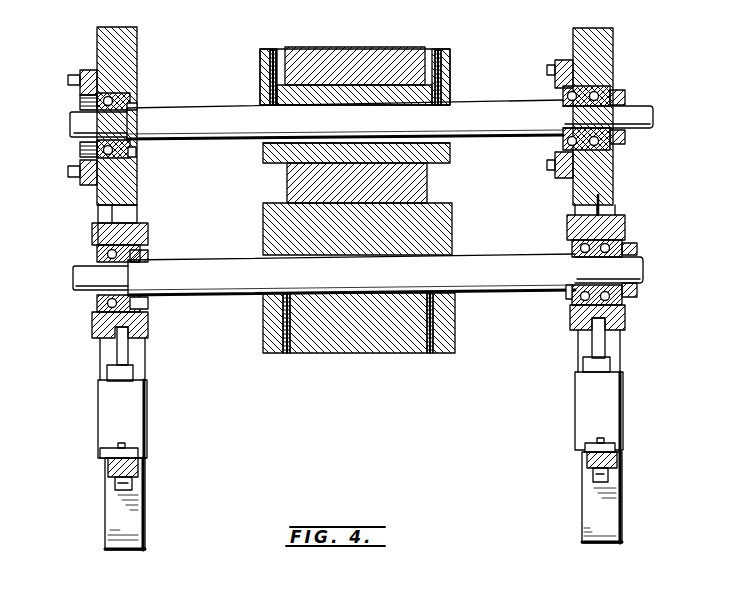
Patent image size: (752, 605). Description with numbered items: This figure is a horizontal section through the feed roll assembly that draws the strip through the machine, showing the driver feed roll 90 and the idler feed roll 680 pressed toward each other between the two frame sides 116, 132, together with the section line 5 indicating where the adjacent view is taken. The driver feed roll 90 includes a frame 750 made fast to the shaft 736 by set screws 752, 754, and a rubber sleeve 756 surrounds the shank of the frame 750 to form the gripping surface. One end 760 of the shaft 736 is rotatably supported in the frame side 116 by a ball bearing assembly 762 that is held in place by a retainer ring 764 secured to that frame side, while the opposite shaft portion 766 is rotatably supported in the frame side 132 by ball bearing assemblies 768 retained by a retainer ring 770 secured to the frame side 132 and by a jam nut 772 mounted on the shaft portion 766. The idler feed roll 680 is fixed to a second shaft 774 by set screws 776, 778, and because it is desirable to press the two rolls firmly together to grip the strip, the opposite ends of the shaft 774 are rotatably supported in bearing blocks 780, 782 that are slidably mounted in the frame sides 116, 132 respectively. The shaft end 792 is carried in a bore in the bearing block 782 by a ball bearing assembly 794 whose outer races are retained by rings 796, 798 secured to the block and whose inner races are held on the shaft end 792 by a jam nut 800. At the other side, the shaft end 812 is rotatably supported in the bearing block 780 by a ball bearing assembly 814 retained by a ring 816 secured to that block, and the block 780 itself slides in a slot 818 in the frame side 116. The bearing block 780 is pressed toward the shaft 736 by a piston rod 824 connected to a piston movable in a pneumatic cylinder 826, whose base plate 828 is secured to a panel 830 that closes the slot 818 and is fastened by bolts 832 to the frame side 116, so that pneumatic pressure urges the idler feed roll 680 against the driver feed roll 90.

The section line 5- 5 is at (586, 180).
The driver feed roll 90 is at (350, 40).
The frame side 116 is at (130, 40).
The frame side 132 is at (610, 40).
The idler feed roll 680 is at (374, 350).
The shaft 736 is at (497, 108).
The frame 750 is at (450, 66).
The set screw 752 is at (273, 50).
The set screw 754 is at (439, 50).
The rubber sleeve 756 is at (393, 50).
The shaft end 760 is at (78, 126).
The ball bearing assembly 762 is at (138, 152).
The retainer ring 764 is at (86, 70).
The shaft portion 766 is at (630, 108).
The ball bearing assemblies 768 is at (616, 90).
The retainer ring 770 is at (563, 62).
The jam nut 772 is at (628, 142).
The shaft 774 is at (482, 258).
The set screw 776 is at (287, 354).
The set screw 778 is at (430, 354).
The bearing block 780 is at (148, 234).
The bearing block 782 is at (626, 222).
The shaft end 792 is at (640, 270).
The ball bearing assembly 794 is at (568, 298).
The ring 796 is at (628, 318).
The ring 798 is at (572, 320).
The jam nut 800 is at (640, 290).
The shaft end 812 is at (82, 276).
The ball bearing assembly 814 is at (142, 306).
The ring 816 is at (95, 326).
The slot 818 is at (128, 212).
The piston rod 824 is at (120, 352).
The pneumatic cylinder 826 is at (108, 414).
The base plate 828 is at (112, 452).
The panel 830 is at (136, 468).
The bolts 832 is at (116, 484).